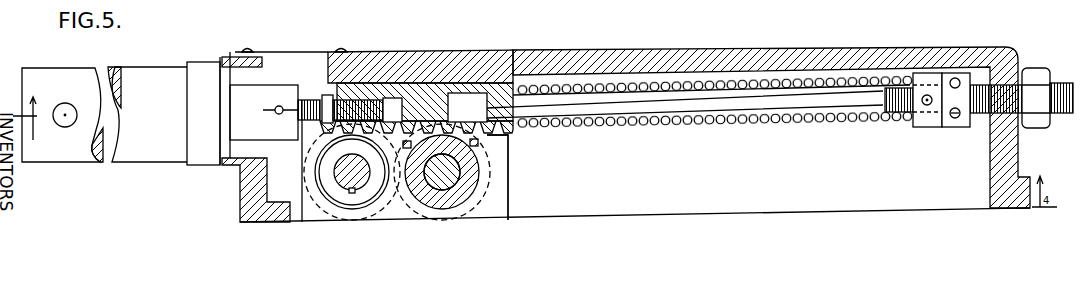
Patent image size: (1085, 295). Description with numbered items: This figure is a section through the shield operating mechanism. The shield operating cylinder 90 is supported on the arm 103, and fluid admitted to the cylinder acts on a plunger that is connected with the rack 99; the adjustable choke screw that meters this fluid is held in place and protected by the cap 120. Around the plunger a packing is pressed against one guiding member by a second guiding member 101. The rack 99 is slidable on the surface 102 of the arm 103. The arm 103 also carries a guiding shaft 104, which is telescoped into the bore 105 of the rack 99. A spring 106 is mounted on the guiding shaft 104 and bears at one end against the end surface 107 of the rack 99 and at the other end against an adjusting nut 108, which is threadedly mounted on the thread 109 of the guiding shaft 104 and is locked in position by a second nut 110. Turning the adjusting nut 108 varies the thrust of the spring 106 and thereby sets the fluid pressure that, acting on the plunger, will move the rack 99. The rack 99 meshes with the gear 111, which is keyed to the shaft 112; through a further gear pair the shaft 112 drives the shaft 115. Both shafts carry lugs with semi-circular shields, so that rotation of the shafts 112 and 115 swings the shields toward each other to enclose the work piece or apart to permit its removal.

The shield operating cylinder 90 is at (152, 122).
The rack 99 is at (380, 83).
The guiding member 101 is at (290, 92).
The surface 102 is at (418, 82).
The arm 103 is at (832, 50).
The guiding shaft 104 is at (720, 95).
The bore 105 is at (472, 94).
The spring 106 is at (740, 127).
The end surface 107 is at (513, 135).
The adjusting nut 108 is at (917, 128).
The thread 109 is at (980, 117).
The second nut 110 is at (953, 128).
The gear 111 is at (477, 185).
The shaft 112 is at (460, 171).
The shaft 115 is at (334, 170).
The cap 120 is at (66, 104).